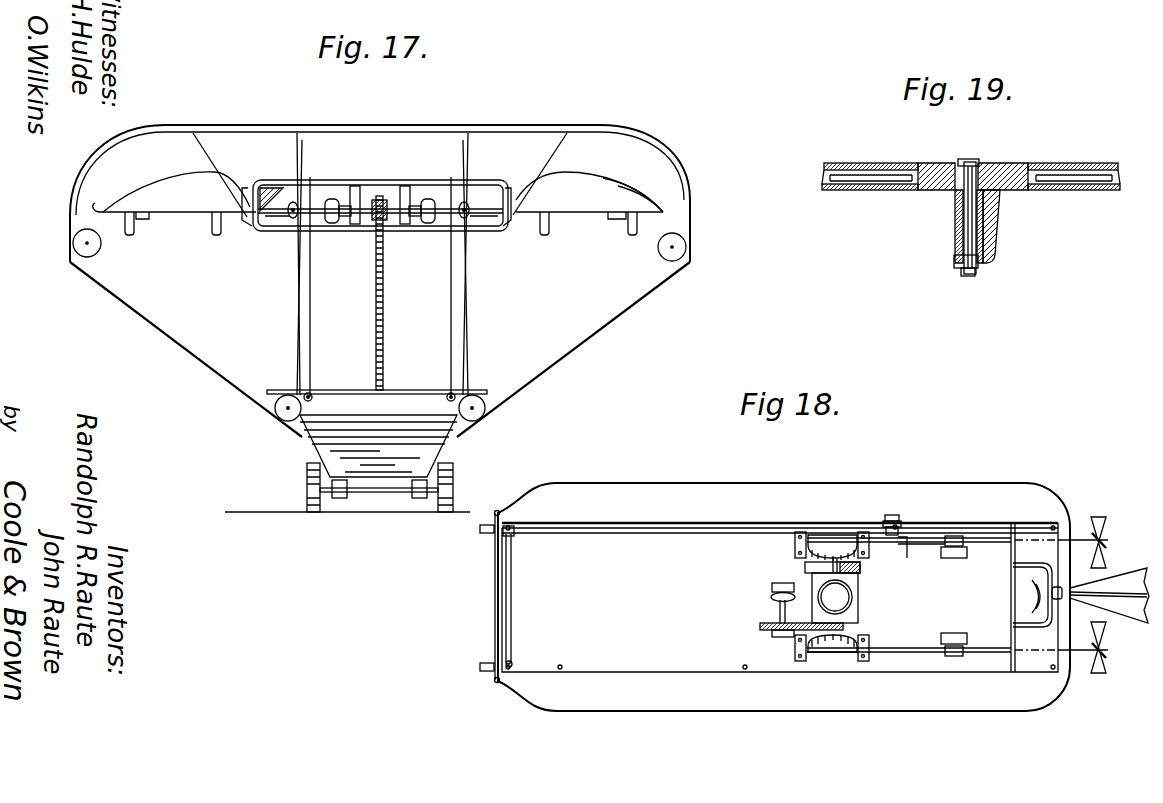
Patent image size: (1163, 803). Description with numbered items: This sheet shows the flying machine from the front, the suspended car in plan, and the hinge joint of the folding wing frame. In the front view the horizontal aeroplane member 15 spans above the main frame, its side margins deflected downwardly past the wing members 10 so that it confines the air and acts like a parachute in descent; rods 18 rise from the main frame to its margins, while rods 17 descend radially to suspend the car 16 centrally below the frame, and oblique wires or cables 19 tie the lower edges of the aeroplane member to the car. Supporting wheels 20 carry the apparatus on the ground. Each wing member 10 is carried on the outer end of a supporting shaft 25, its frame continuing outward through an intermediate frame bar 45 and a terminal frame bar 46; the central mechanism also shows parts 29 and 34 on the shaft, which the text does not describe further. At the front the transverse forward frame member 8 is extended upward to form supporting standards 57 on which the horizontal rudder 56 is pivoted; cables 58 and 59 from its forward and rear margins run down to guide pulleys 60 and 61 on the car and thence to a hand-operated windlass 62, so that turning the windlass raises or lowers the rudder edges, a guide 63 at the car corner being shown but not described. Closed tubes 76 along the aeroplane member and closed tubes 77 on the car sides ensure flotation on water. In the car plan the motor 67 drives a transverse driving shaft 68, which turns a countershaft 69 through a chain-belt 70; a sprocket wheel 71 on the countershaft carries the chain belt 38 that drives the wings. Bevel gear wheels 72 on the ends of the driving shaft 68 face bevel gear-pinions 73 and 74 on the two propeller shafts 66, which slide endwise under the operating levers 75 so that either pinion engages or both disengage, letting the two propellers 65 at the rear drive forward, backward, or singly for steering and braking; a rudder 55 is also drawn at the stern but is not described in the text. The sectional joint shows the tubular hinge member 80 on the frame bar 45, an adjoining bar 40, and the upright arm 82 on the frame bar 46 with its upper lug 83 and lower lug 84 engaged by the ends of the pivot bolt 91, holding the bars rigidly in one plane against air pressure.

In FIG. 17, the forward frame member 8 is at (350, 232).
In FIG. 17, the wing member 10 is at (383, 192).
In FIG. 17, the aeroplane member 15 is at (428, 126).
In FIG. 17, the car 16 is at (378, 446).
In FIG. 18, the car 16 is at (784, 597).
In FIG. 17, the rods 17 is at (297, 312).
In FIG. 17, the rods 18 is at (318, 150).
In FIG. 17, the oblique wires or cables 19 is at (187, 353).
In FIG. 17, the supporting wheels 20 is at (306, 480).
In FIG. 17, the supporting shaft 25 is at (263, 217).
In FIG. 17, the plates 29 is at (355, 176).
In FIG. 17, the sliding collars 34 is at (330, 223).
In FIG. 17, the chain belt 38 is at (372, 350).
In FIG. 19, the plate 40 is at (1064, 163).
In FIG. 17, the intermediate frame bar 45 is at (178, 225).
In FIG. 19, the intermediate frame bar 45 is at (870, 163).
In FIG. 17, the terminal frame bar 46 is at (94, 198).
In FIG. 18, the rudder 55 is at (1118, 580).
In FIG. 17, the horizontal rudder 56 is at (380, 183).
In FIG. 17, the supporting standards 57 is at (243, 222).
In FIG. 17, the cable 58 is at (311, 318).
In FIG. 18, the cable 58 is at (630, 521).
In FIG. 18, the cable 59 is at (660, 528).
In FIG. 17, the guide pulley 60 is at (312, 398).
In FIG. 18, the guide pulley 60 is at (482, 532).
In FIG. 17, the guide pulley 61 is at (447, 397).
In FIG. 18, the guide pulley 61 is at (482, 668).
In FIG. 18, the hand-operated windlass 62 is at (513, 661).
In FIG. 18, the guide 63 is at (514, 533).
In FIG. 18, the propellers 65 is at (1112, 518).
In FIG. 18, the propeller shafts 66 is at (1003, 550).
In FIG. 18, the motor 67 is at (845, 604).
In FIG. 18, the driving shaft 68 is at (862, 568).
In FIG. 18, the countershaft 69 is at (779, 612).
In FIG. 18, the chain-belt 70 is at (762, 630).
In FIG. 18, the sprocket wheel 71 is at (772, 588).
In FIG. 18, the bevel gear wheels 72 is at (835, 535).
In FIG. 18, the bevel gear-pinion 73 is at (805, 532).
In FIG. 18, the bevel gear-pinion 74 is at (866, 532).
In FIG. 18, the operating levers 75 is at (954, 536).
In FIG. 17, the closed tubes 76 is at (90, 246).
In FIG. 17, the closed tubes 77 is at (282, 412).
In FIG. 19, the tubular hinge member 80 is at (955, 222).
In FIG. 19, the upright arm 82 is at (997, 228).
In FIG. 19, the upper lug 83 is at (955, 163).
In FIG. 19, the lower lug 84 is at (958, 268).
In FIG. 19, the bolt 91 is at (979, 160).